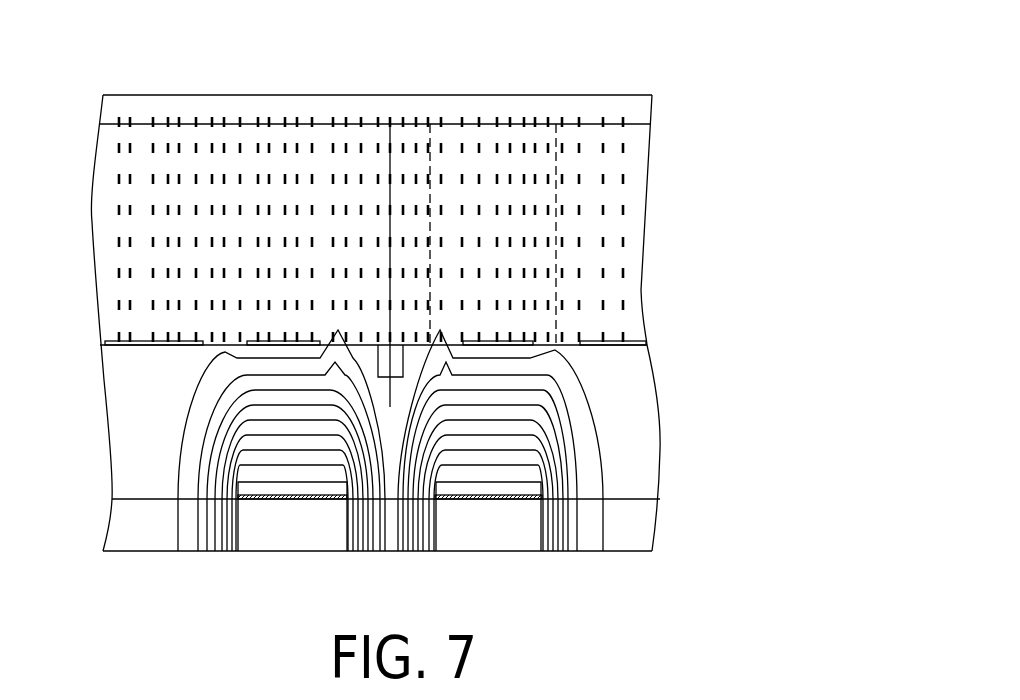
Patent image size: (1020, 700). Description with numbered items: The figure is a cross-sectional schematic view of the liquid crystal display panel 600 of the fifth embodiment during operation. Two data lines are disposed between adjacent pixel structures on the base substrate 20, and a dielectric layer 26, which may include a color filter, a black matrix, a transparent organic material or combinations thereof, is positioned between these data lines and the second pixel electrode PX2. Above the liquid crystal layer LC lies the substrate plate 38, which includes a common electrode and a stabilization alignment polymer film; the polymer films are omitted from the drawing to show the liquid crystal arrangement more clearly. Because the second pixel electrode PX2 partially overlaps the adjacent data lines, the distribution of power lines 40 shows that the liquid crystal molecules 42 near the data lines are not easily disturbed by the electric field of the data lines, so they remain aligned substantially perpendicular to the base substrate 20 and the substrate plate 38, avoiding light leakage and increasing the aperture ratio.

The liquid crystal display panel 600 is at (666, 50).
The substrate plate 38 is at (641, 108).
The liquid crystal molecules 42 is at (556, 190).
The liquid crystal layer LC is at (623, 242).
The second pixel electrode PX2 is at (105, 343).
The dielectric layer 26 is at (632, 400).
The power lines 40 is at (594, 442).
The base substrate 20 is at (643, 519).